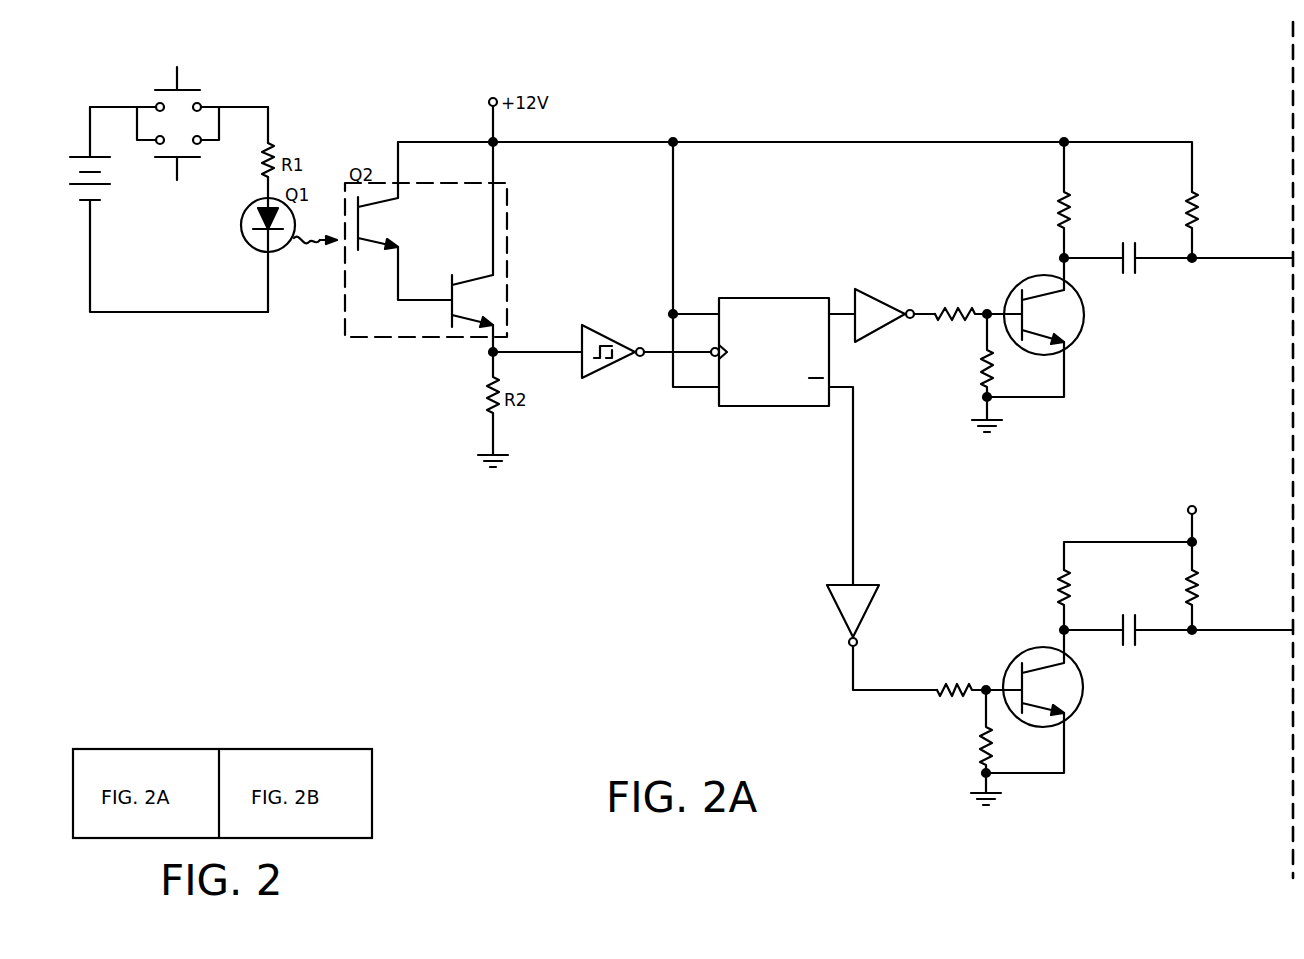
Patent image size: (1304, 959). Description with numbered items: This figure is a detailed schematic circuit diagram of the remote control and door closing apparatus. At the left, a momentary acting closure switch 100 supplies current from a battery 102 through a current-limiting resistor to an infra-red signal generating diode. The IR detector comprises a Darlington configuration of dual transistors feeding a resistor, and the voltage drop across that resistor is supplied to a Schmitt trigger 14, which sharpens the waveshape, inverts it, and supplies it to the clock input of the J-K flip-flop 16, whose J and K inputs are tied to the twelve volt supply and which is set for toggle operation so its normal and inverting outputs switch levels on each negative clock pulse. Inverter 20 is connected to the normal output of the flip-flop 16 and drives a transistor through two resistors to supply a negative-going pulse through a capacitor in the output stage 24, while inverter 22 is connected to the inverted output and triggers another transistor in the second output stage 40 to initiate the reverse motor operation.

The momentary acting closure switch 100 is at (220, 88).
The battery 102 is at (120, 182).
The Schmitt trigger 14 is at (607, 322).
The J-K flip-flop 16 is at (786, 393).
The inverter 20 is at (884, 324).
The inverter 22 is at (860, 604).
The first transistor output stage 24 is at (1100, 342).
The second transistor output stage 40 is at (1128, 705).